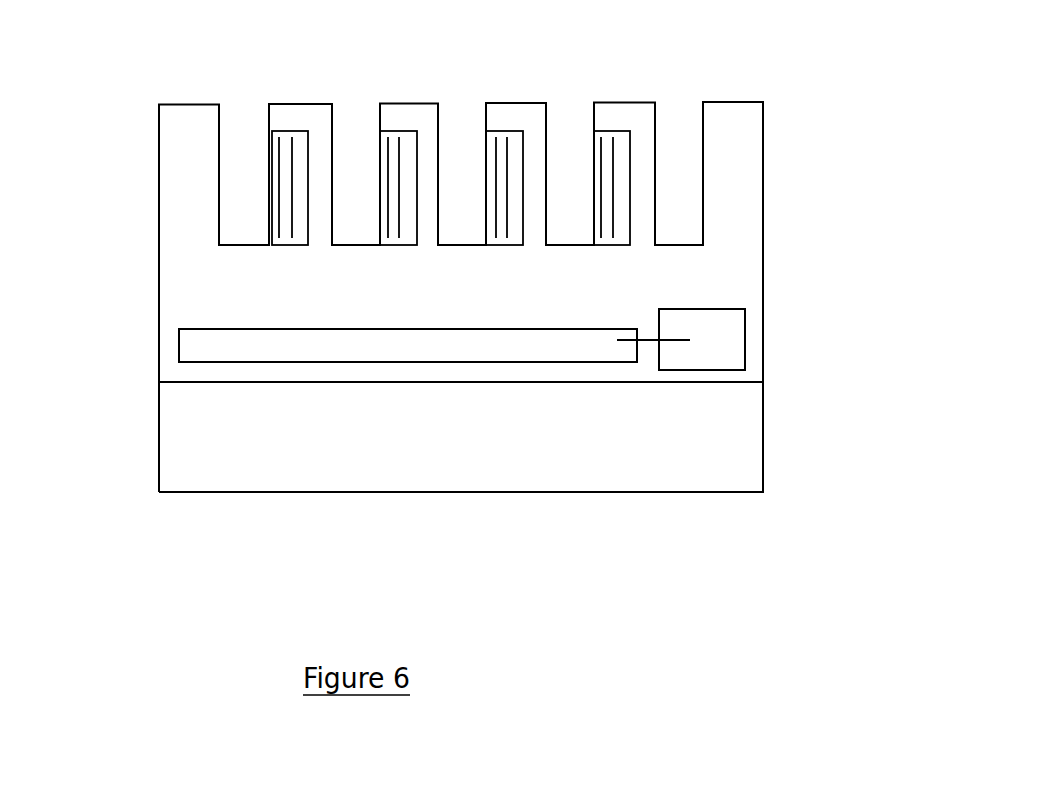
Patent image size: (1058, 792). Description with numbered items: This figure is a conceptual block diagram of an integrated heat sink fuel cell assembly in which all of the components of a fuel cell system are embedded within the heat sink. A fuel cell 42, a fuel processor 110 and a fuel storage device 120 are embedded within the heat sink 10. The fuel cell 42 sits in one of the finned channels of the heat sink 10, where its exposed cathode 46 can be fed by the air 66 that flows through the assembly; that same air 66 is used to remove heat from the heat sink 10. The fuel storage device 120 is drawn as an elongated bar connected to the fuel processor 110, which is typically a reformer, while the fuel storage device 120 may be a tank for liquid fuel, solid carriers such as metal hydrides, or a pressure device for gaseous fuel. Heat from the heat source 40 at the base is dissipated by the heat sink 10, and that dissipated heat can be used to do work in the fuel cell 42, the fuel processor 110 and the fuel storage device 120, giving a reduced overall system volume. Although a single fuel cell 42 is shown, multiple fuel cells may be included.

The heat sink 10 is at (735, 238).
The air 66 is at (338, 82).
The fuel cell 42 is at (407, 131).
The exposed cathode 46 is at (385, 151).
The heat source 40 is at (468, 447).
The fuel storage device 120 is at (200, 353).
The fuel processor 110 is at (727, 340).